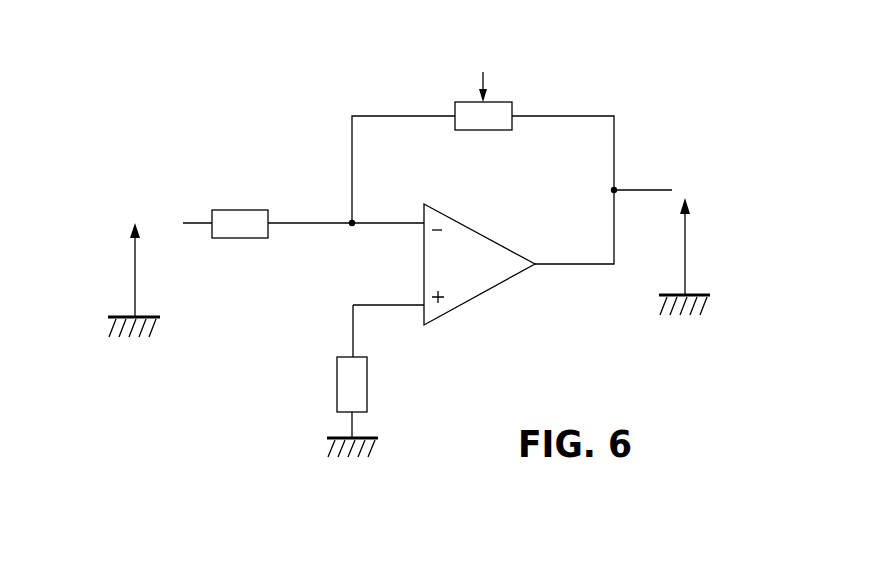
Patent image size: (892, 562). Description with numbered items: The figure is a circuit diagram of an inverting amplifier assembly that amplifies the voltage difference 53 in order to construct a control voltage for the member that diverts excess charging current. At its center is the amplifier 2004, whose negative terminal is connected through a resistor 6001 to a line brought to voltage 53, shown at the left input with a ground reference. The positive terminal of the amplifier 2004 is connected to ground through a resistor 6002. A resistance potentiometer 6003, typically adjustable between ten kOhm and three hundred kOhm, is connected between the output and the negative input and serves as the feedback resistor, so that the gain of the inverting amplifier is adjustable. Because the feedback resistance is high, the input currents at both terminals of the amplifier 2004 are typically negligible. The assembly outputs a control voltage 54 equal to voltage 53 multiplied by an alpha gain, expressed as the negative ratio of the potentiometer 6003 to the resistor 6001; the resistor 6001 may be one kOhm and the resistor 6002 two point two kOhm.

The voltage difference 53 is at (98, 238).
The control voltage 54 is at (717, 202).
The resistor 6001 is at (240, 210).
The resistor 6002 is at (336, 397).
The resistance potentiometer 6003 is at (502, 102).
The amplifier 2004 is at (479, 295).